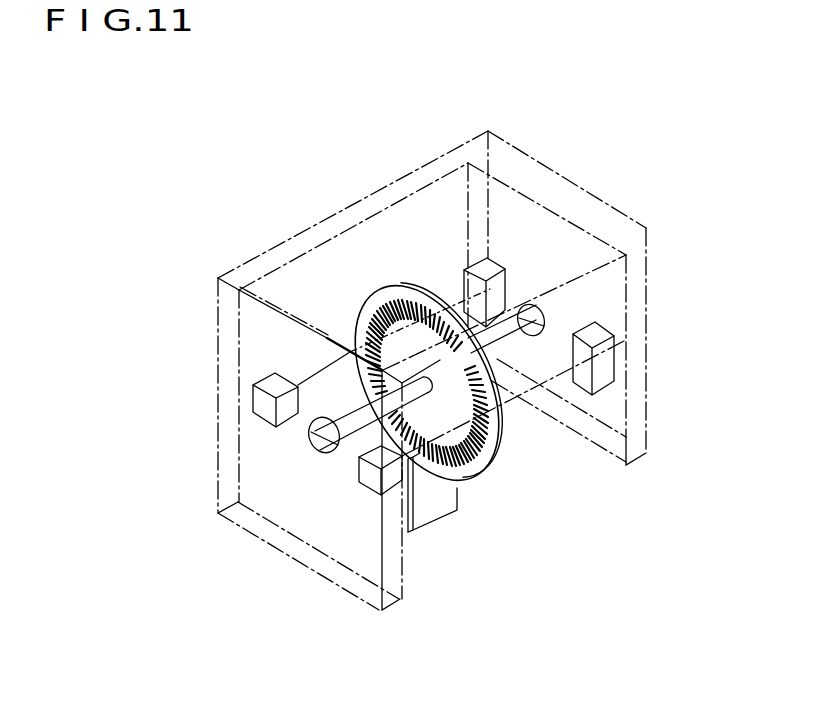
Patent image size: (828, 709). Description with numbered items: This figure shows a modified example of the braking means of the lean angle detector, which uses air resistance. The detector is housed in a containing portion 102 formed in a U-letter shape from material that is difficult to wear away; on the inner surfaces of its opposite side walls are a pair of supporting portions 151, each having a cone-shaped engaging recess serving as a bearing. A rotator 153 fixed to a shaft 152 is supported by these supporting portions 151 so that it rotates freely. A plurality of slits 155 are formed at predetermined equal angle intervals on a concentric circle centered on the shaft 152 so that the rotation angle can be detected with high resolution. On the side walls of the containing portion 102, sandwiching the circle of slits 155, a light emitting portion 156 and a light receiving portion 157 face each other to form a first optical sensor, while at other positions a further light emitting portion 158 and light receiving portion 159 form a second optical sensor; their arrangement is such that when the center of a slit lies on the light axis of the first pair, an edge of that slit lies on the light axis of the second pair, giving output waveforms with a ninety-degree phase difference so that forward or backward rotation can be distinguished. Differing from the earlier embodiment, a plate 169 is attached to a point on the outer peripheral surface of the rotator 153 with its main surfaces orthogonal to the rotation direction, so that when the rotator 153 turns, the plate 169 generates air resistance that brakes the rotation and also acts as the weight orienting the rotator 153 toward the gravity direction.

The containing portion 102 is at (634, 388).
The supporting portions 151 is at (312, 438).
The shaft 152 is at (348, 424).
The rotator 153 is at (506, 414).
The slits 155 is at (490, 468).
The light emitting portion 156 is at (600, 330).
The light receiving portion 157 is at (367, 482).
The light emitting portion 158 is at (472, 263).
The light receiving portion 159 is at (276, 380).
The plate 169 is at (438, 496).